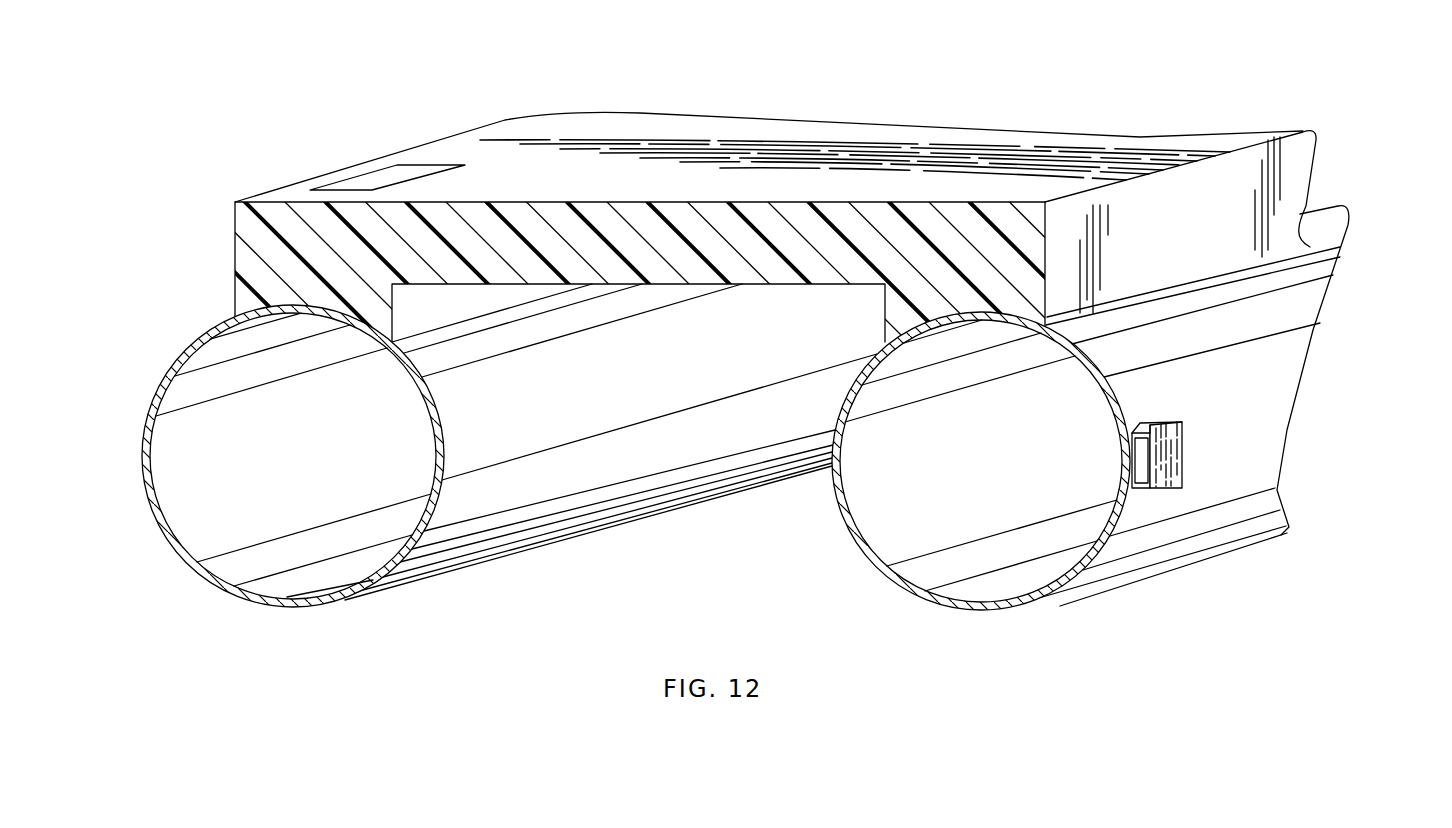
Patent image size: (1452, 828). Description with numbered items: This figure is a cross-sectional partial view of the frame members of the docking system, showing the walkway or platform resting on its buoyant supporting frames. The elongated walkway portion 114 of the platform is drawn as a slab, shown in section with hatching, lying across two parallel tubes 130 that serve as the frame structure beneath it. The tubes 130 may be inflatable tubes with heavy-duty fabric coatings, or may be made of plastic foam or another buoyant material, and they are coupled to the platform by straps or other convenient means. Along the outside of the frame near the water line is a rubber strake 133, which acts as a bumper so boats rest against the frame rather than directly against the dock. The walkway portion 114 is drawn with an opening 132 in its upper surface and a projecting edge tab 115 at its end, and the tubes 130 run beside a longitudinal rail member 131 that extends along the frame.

The elongated walkway portion 114 is at (765, 133).
The lip 115 is at (1303, 142).
The tubes 130 is at (362, 570).
The rail 131 is at (1162, 532).
The slot 132 is at (355, 183).
The rubber strakes 133 is at (1163, 473).